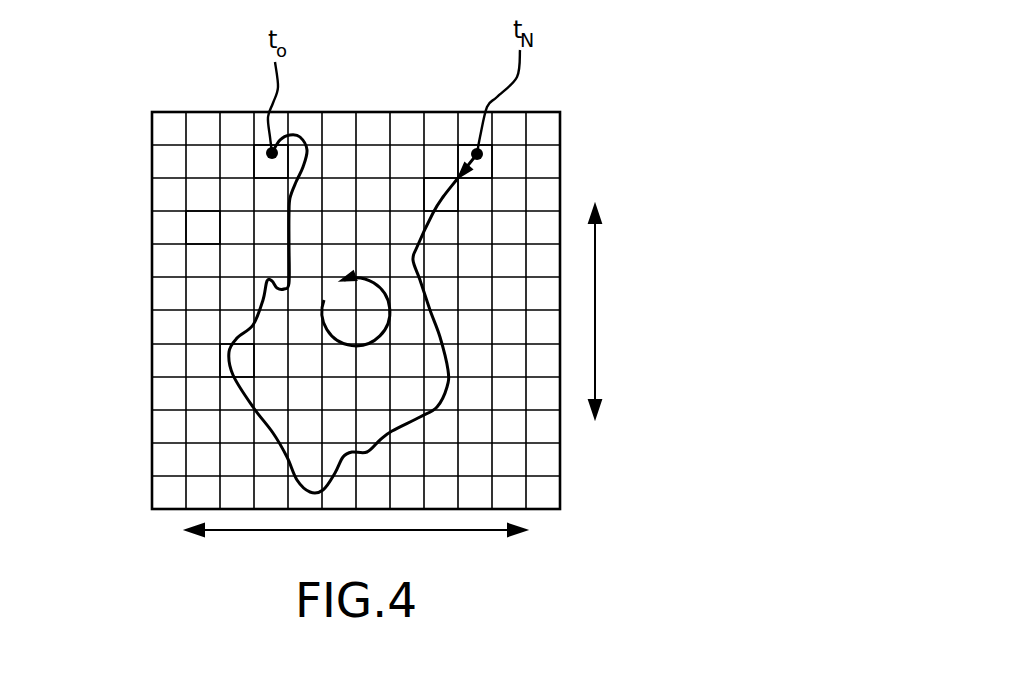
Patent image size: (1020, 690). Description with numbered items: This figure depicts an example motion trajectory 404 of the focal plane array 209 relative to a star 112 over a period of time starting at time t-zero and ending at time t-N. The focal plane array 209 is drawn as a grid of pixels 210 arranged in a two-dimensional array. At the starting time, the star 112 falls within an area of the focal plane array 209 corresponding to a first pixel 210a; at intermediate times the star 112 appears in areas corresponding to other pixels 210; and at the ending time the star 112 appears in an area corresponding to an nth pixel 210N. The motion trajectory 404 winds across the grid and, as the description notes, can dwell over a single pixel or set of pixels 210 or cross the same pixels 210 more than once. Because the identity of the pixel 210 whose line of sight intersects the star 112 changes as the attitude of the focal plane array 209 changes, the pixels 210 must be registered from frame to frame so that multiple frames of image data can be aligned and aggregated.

The star 112 is at (272, 153).
The focal plane array 209 is at (563, 462).
The pixels 210 is at (202, 232).
The first pixel 210a is at (260, 163).
The nth pixel 210N is at (477, 154).
The motion trajectory 404 is at (447, 197).